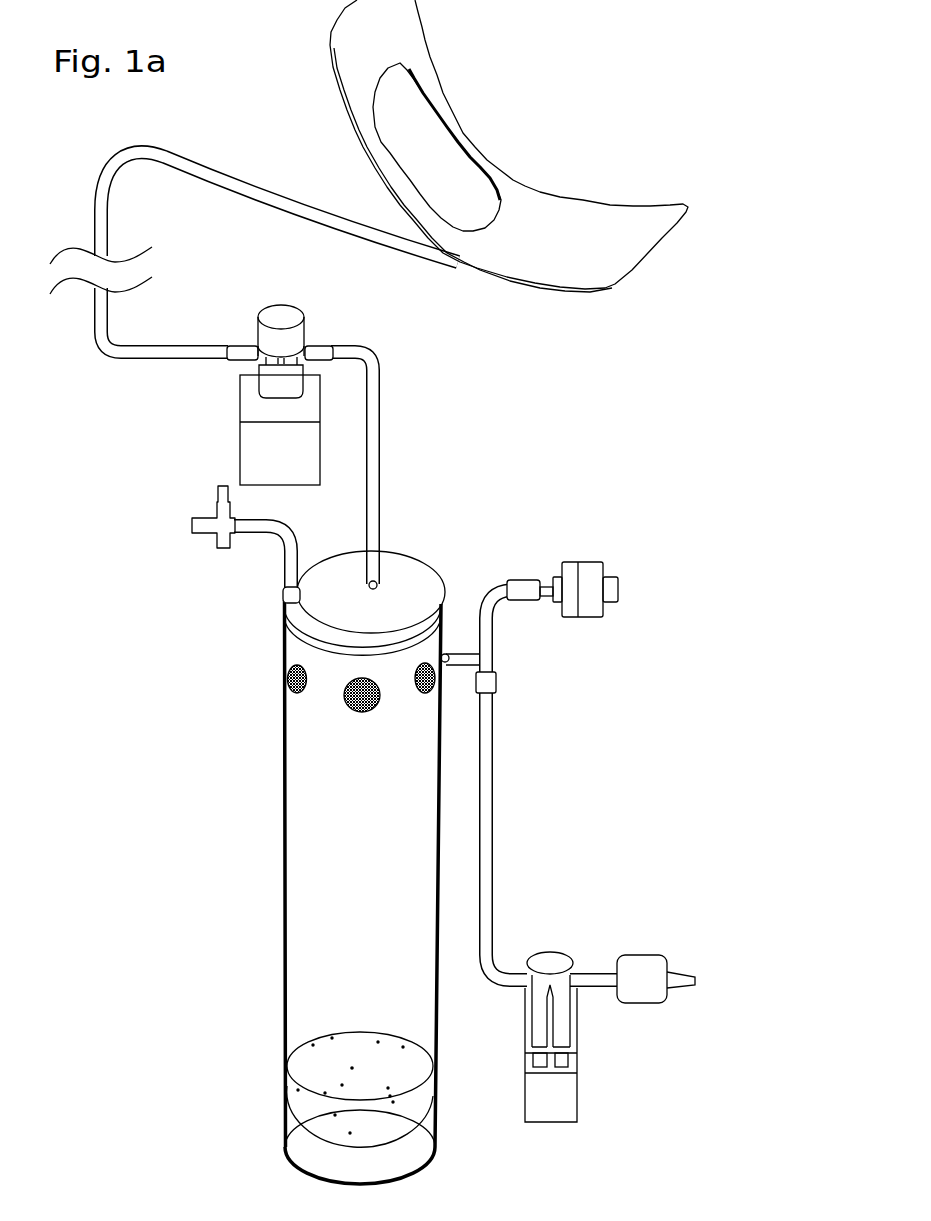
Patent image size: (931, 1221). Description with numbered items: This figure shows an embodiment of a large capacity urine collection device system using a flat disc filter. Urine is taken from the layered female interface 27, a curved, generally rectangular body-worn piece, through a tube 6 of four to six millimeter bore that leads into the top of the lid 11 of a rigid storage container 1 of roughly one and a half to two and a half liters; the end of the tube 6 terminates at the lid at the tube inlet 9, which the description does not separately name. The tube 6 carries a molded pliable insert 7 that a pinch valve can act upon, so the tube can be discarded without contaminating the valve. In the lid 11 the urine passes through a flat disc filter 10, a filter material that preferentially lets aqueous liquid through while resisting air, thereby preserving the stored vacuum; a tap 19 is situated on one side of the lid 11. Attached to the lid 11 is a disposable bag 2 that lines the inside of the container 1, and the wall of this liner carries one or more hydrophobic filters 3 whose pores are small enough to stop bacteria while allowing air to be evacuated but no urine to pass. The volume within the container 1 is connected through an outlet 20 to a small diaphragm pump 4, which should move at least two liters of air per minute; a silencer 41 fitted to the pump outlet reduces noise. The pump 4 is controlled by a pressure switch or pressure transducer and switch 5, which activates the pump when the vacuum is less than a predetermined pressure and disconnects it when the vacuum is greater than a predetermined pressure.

The rigid storage container 1 is at (287, 1120).
The bag 2 is at (287, 1090).
The hydrophobic filter 3 is at (283, 700).
The diaphragm pump 4 is at (553, 1093).
The pressure switch or pressure transducer and switch 5 is at (587, 585).
The tube 6 is at (376, 435).
The molded pliable insert 7 is at (312, 352).
The tube outlet 9 is at (377, 580).
The flat disc filter 10 is at (272, 340).
The lid 11 is at (285, 607).
The tap 19 is at (212, 525).
The outlet 20 is at (447, 652).
The layered female interface 27 is at (517, 227).
The silencer 41 is at (643, 975).